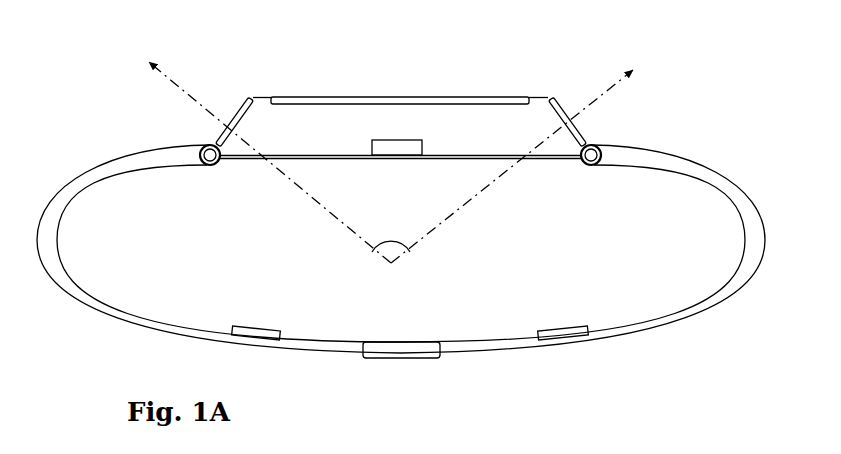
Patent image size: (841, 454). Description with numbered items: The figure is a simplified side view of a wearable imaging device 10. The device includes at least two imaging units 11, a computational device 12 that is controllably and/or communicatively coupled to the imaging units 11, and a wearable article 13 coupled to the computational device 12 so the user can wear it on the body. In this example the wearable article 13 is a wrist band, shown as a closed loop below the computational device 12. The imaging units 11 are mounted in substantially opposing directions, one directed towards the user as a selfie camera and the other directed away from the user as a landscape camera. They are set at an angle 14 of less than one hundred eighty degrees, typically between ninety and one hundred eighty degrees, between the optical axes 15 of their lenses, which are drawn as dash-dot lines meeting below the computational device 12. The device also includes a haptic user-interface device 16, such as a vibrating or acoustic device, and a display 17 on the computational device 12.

The wearable imaging device 10 is at (438, 56).
The imaging unit 11 is at (246, 99).
The computational device 12 is at (550, 161).
The wearable article 13 is at (180, 320).
The angle 14 is at (394, 246).
The optical axis 15 is at (313, 203).
The haptic user-interface device 16 is at (424, 142).
The display 17 is at (362, 95).